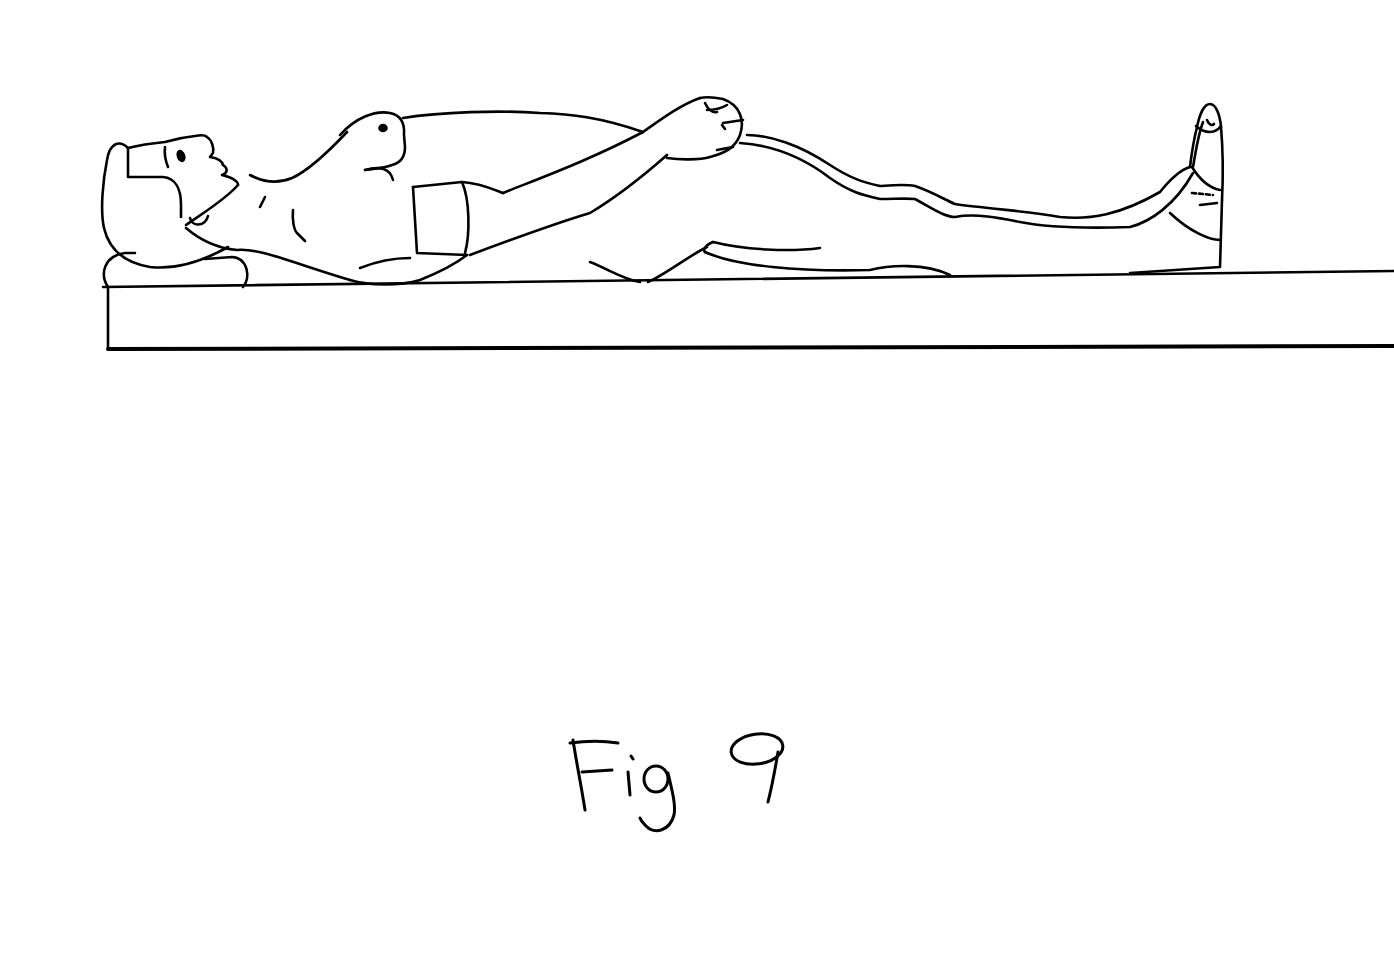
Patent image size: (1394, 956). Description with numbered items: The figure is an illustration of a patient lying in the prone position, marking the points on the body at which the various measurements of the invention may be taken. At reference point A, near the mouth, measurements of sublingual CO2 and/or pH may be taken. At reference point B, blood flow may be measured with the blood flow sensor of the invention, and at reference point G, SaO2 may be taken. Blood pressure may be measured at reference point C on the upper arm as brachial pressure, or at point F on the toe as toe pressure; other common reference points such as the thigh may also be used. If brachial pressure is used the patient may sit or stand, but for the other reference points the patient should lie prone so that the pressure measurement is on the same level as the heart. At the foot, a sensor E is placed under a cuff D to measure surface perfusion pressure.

The reference point A is at (215, 158).
The reference point B is at (237, 162).
The reference point C is at (450, 220).
The cuff D is at (1240, 225).
The sensor E is at (1220, 187).
The reference point F is at (1217, 113).
The reference point G is at (229, 172).